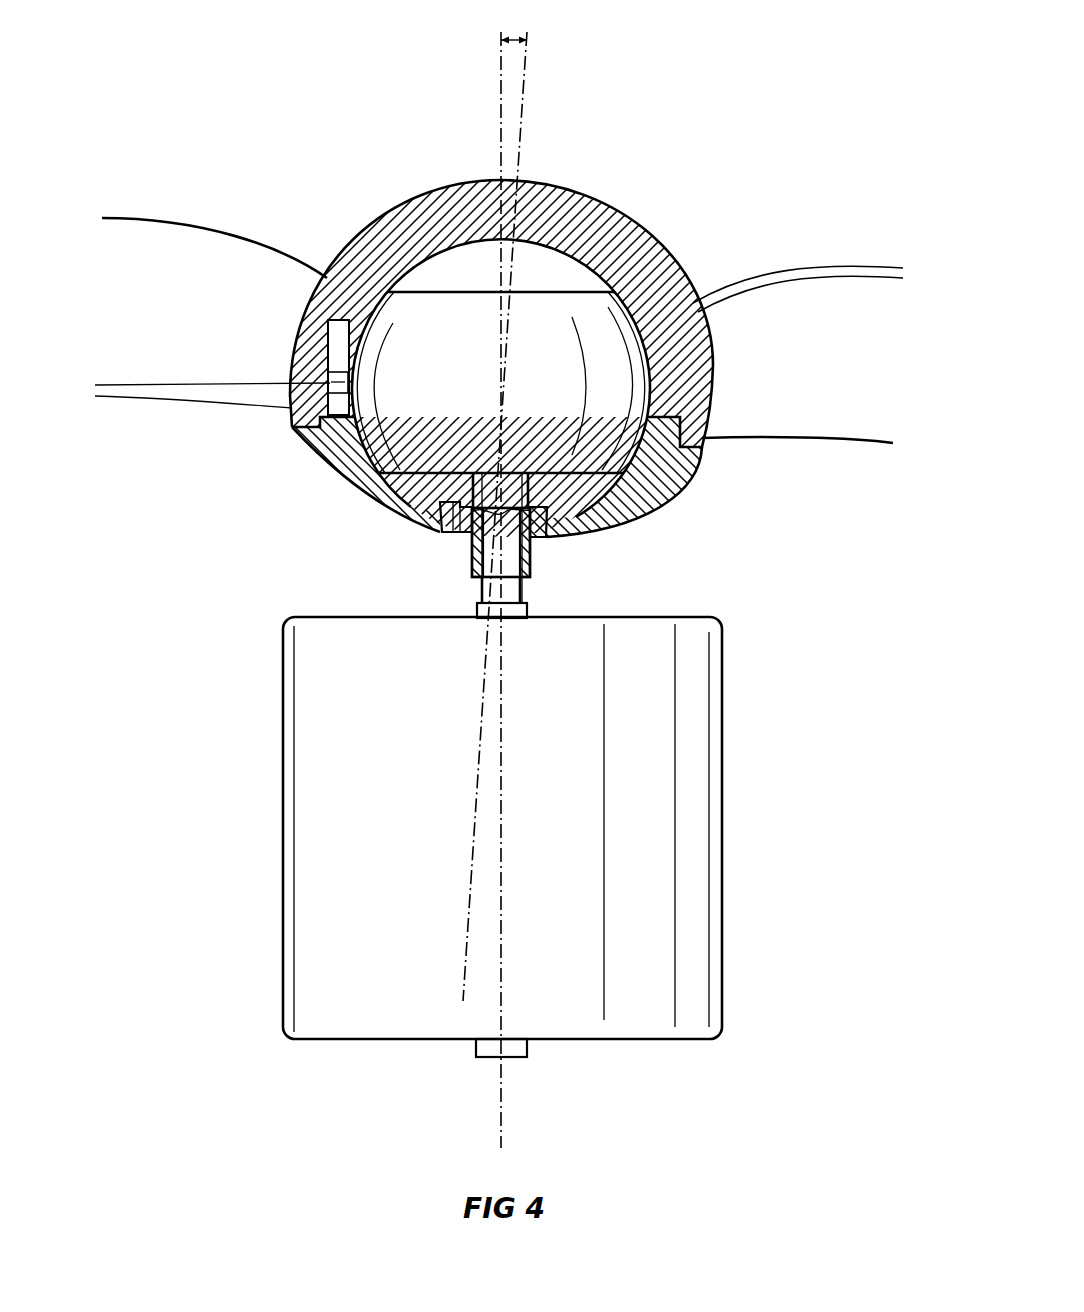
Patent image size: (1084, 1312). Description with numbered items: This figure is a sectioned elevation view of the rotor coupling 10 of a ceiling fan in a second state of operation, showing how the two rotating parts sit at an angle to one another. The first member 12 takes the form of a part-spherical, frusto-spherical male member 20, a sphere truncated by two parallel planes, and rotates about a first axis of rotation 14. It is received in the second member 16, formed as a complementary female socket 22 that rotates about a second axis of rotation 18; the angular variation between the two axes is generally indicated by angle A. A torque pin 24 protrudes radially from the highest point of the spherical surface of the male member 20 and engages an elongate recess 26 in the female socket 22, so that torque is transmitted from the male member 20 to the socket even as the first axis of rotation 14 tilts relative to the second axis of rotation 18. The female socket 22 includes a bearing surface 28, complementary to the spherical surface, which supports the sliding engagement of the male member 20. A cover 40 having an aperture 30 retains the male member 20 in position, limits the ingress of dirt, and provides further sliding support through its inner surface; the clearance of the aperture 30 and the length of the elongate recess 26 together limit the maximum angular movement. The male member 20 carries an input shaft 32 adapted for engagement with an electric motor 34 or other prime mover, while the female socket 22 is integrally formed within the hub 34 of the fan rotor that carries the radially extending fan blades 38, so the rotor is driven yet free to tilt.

The rotor coupling 10 is at (499, 576).
The first member 12 is at (500, 447).
The male member 20 is at (490, 351).
The first axis of rotation 14 is at (500, 115).
The second member 16 is at (521, 358).
The female socket 22 is at (643, 247).
The second axis of rotation 18 is at (522, 85).
The torque pin 24 is at (330, 383).
The elongate recess 26 is at (338, 332).
The bearing surface 28 is at (420, 260).
The aperture 30 is at (457, 535).
The input shaft 32 is at (533, 555).
The hub 34 is at (555, 601).
The fan blades 38 is at (167, 235).
The cover 40 is at (700, 470).